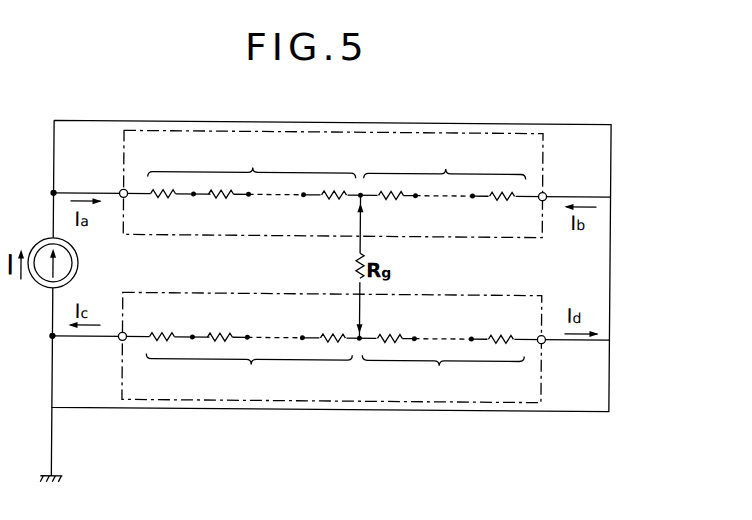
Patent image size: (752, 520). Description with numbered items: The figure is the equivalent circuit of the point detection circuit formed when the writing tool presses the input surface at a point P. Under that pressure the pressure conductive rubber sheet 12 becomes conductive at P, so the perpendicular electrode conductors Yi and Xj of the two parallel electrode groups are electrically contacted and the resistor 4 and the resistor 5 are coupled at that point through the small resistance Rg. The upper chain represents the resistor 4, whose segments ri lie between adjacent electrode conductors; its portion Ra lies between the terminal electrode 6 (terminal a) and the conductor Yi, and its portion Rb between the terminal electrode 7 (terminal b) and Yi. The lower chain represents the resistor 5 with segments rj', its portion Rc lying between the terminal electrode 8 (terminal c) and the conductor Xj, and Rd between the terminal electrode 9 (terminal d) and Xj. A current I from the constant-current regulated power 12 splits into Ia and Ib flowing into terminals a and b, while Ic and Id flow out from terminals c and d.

The resistor 4 is at (515, 131).
The resistor 5 is at (521, 401).
The terminal electrode 6 is at (120, 192).
The terminal electrode 7 is at (545, 191).
The terminal electrode 8 is at (120, 342).
The terminal electrode 9 is at (545, 341).
The pressure conductive rubber sheet 12 is at (78, 262).